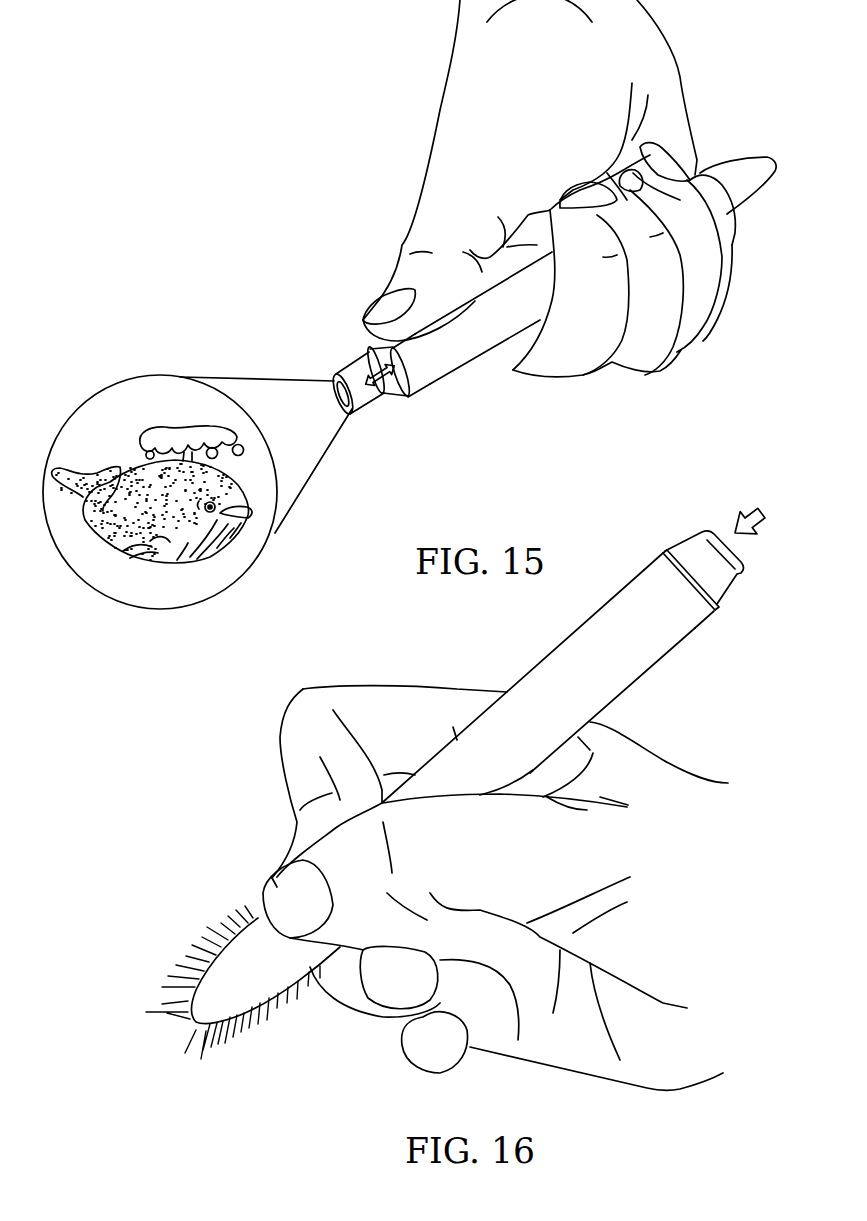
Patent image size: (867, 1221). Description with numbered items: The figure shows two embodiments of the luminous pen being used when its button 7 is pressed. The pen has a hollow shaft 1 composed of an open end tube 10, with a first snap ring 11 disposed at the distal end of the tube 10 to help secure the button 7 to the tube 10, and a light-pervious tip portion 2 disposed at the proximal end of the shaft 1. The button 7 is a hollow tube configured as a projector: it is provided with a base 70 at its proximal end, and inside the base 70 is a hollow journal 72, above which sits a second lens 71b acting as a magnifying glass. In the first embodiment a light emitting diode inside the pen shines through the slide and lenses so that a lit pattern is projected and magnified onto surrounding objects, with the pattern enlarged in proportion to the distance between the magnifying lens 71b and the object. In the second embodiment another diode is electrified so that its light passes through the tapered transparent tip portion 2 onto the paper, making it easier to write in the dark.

In FIG. 15, the shaft 1 is at (470, 362).
In FIG. 16, the shaft 1 is at (578, 677).
In FIG. 15, the open end tube 10 is at (444, 378).
In FIG. 16, the open end tube 10 is at (647, 663).
In FIG. 15, the first snap ring 11 is at (400, 397).
In FIG. 16, the first snap ring 11 is at (730, 608).
In FIG. 15, the tip portion 2 is at (775, 167).
In FIG. 16, the tip portion 2 is at (250, 930).
In FIG. 15, the button 7 is at (322, 324).
In FIG. 16, the button 7 is at (740, 584).
In FIG. 15, the base 70 is at (362, 340).
In FIG. 16, the base 70 is at (718, 590).
In FIG. 15, the hollow journal 72 is at (343, 373).
In FIG. 16, the hollow journal 72 is at (740, 574).
In FIG. 15, the second lens 71b is at (332, 386).